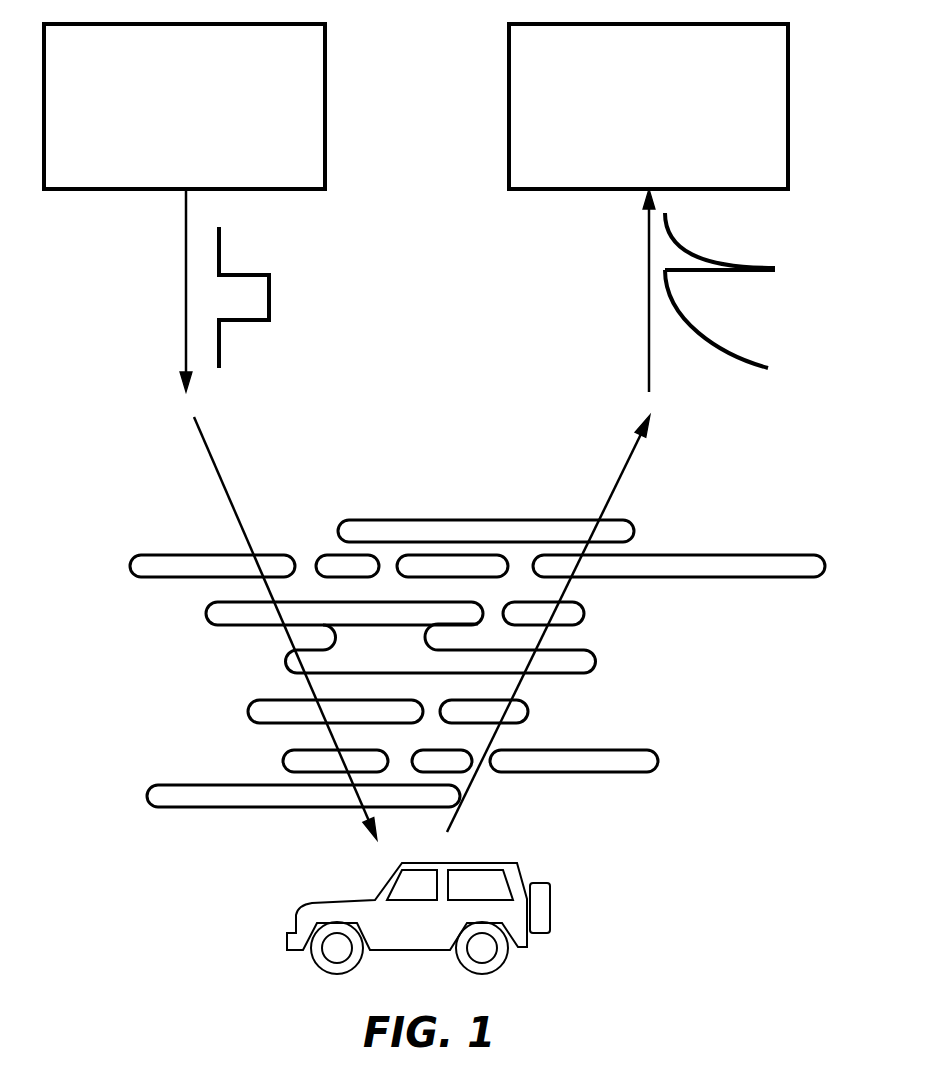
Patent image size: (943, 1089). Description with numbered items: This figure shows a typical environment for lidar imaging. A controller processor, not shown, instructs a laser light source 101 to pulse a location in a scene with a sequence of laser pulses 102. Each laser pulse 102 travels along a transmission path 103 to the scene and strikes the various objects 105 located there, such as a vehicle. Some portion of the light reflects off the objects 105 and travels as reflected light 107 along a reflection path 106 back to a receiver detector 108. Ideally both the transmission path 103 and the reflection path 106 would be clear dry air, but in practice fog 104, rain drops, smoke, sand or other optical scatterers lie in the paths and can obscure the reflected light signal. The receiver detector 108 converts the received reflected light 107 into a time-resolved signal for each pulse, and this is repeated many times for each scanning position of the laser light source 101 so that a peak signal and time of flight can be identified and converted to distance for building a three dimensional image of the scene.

The laser light source 101 is at (162, 148).
The laser pulse 102 is at (270, 298).
The transmission path 103 is at (220, 472).
The fog 104 is at (222, 723).
The object 105 is at (545, 882).
The reflection path 106 is at (620, 474).
The reflected light 107 is at (762, 267).
The receiver detector 108 is at (677, 132).